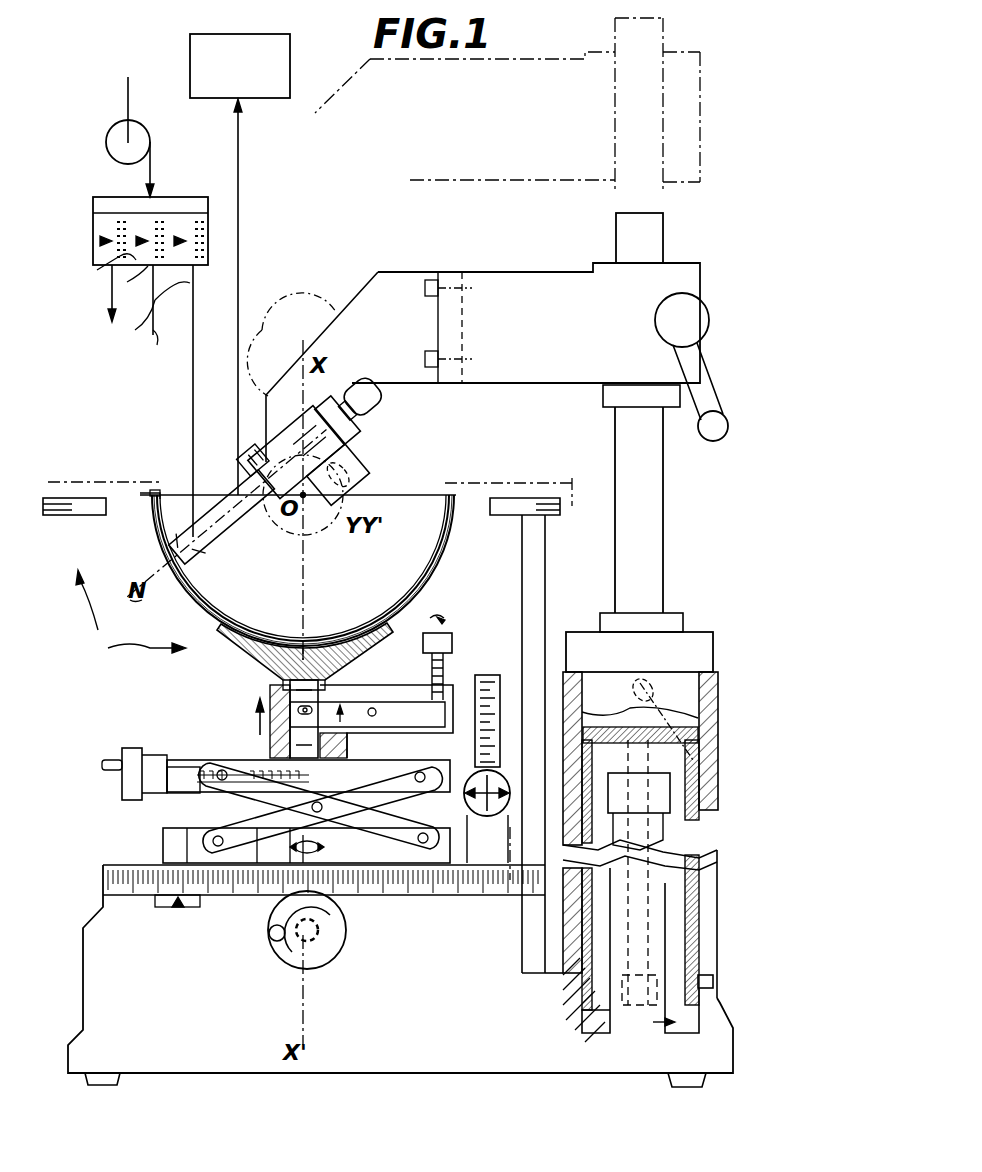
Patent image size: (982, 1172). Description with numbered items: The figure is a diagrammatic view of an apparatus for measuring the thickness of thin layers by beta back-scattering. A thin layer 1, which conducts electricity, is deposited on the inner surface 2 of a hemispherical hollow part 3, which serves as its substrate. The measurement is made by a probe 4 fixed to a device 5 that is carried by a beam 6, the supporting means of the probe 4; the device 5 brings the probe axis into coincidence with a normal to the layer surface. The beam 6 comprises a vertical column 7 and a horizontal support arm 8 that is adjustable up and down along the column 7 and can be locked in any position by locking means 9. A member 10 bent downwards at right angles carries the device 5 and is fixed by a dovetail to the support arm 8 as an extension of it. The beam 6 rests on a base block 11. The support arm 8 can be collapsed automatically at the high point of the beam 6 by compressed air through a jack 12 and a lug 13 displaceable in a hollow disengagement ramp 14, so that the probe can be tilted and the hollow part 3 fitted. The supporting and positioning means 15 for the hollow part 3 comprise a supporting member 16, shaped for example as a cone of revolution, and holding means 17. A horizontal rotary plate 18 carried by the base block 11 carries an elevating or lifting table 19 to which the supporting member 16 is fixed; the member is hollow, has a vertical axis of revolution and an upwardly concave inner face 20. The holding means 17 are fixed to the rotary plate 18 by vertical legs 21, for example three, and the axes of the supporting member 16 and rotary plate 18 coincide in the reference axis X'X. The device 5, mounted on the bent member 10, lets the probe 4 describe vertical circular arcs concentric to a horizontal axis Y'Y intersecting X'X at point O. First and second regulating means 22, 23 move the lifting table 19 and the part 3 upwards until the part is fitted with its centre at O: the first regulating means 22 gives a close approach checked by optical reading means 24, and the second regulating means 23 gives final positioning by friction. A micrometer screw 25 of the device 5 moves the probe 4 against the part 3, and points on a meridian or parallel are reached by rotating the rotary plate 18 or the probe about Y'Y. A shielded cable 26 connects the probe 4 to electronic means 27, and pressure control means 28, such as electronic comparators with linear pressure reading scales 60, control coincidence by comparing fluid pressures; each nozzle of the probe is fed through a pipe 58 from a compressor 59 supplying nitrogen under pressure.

The thin layer 1 is at (408, 576).
The inner surface 2 is at (413, 570).
The hemispherical hollow part 3 is at (445, 578).
The probe 4 is at (232, 590).
The device 5 is at (376, 468).
The beam 6 is at (664, 550).
The vertical column 7 is at (624, 236).
The horizontal support arm 8 is at (550, 282).
The locking means 9 is at (658, 318).
The bent member 10 is at (418, 277).
The base block 11 is at (400, 976).
The jack 12 is at (664, 883).
The lug 13 is at (710, 975).
The hollow disengagement ramp 14 is at (705, 858).
The supporting and positioning means 15 is at (129, 618).
The supporting member 16 is at (250, 674).
The holding means 17 is at (110, 488).
The horizontal rotary plate 18 is at (103, 866).
The elevating or lifting table 19 is at (215, 757).
The upwardly concave inner face 20 is at (330, 655).
The vertical legs 21 is at (542, 563).
The first regulating means 22 is at (125, 751).
The second regulating means 23 is at (452, 642).
The optical reading means 24 is at (490, 833).
The micrometer screw 25 is at (358, 420).
The shielded cable 26 is at (266, 196).
The electronic means 27 is at (240, 66).
The pressure control means 28 is at (181, 187).
The pipe 58 is at (175, 345).
The compressor 59 is at (150, 140).
The linear pressure reading scales 60 is at (112, 268).